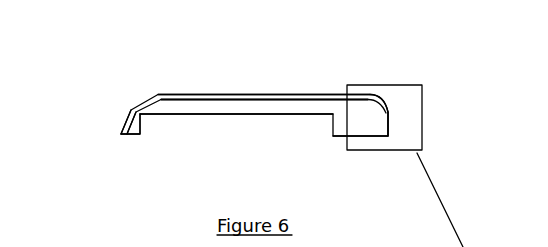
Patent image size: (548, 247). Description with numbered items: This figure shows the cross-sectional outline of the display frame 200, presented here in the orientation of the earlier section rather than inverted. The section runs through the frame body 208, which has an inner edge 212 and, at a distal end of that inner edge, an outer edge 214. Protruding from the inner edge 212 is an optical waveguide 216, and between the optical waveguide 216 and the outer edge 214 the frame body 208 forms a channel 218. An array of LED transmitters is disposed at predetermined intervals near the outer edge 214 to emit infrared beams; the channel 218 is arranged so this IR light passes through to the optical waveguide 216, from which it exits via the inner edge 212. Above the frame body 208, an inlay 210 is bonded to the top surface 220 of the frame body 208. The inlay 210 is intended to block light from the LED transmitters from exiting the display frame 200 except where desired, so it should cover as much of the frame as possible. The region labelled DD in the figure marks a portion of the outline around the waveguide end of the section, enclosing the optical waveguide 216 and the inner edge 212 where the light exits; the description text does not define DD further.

The display frame 200 is at (304, 79).
The frame body 208 is at (197, 103).
The inlay 210 is at (212, 94).
The inner edge 212 is at (392, 125).
The outer edge 214 is at (121, 127).
The optical waveguide 216 is at (377, 127).
The channel 218 is at (154, 138).
The top surface 220 is at (264, 100).
The detail region DD is at (407, 84).